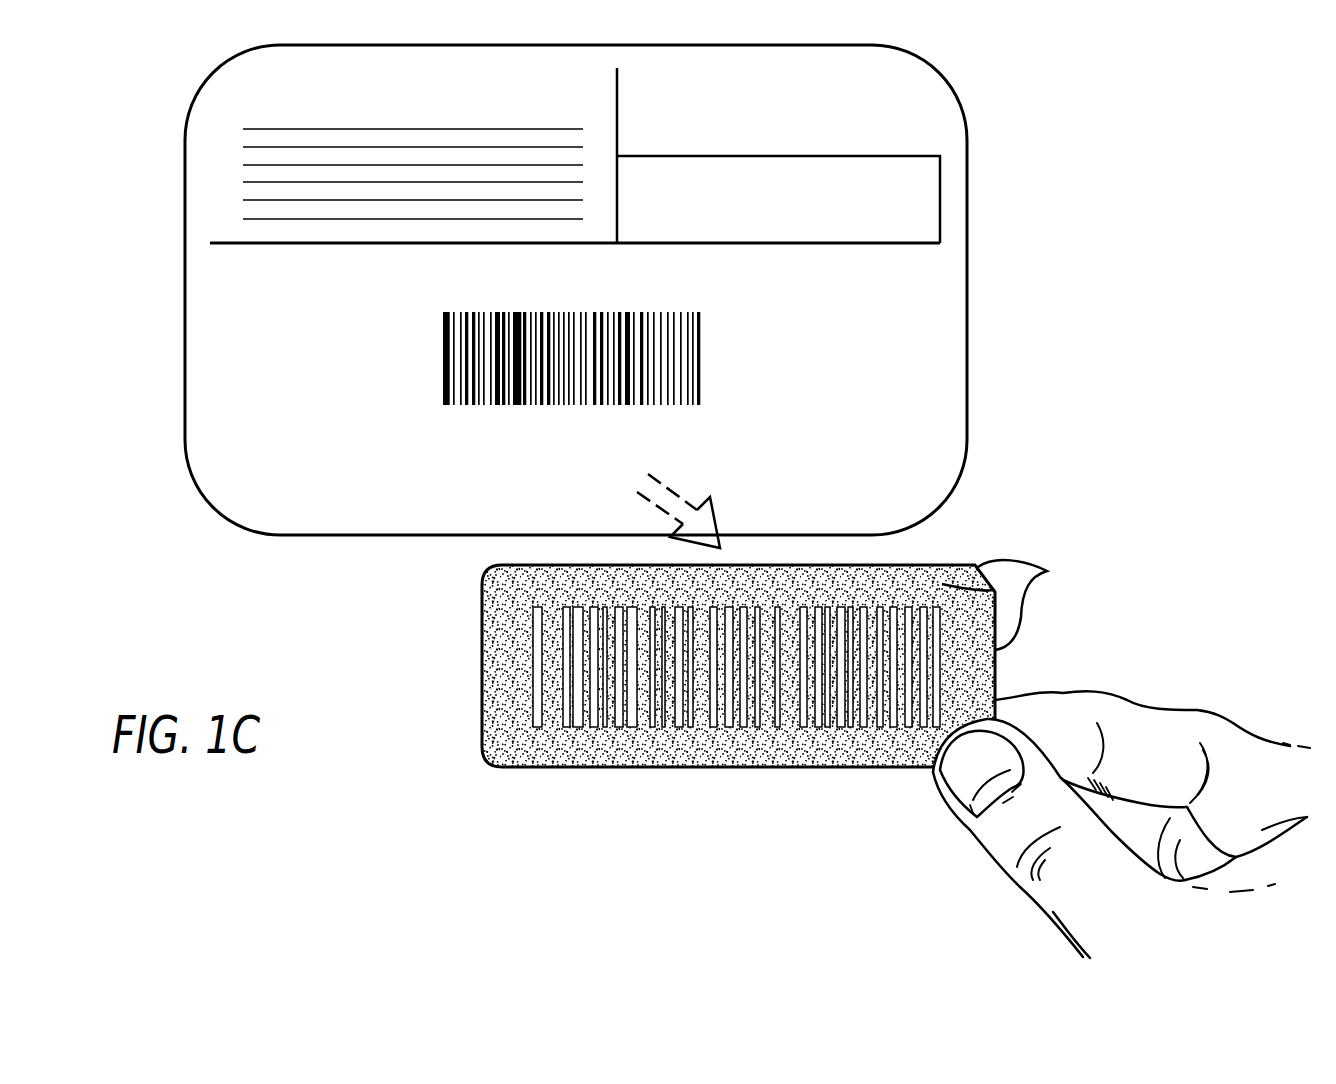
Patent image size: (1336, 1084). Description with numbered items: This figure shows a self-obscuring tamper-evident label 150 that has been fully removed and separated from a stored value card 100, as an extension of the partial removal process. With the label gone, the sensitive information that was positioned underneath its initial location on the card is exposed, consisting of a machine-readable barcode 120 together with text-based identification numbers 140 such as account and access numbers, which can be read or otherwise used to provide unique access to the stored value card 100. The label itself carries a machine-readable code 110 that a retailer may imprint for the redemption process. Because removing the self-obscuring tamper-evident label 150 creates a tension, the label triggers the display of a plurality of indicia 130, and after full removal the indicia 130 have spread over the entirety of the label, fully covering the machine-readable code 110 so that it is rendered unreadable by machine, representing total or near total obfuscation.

The stored value card 100 is at (208, 84).
The machine-readable code 110 is at (538, 768).
The machine-readable barcode 120 is at (706, 306).
The indicia 130 is at (1023, 603).
The text-based identification numbers 140 is at (432, 402).
The self-obscuring tamper-evident label 150 is at (482, 640).